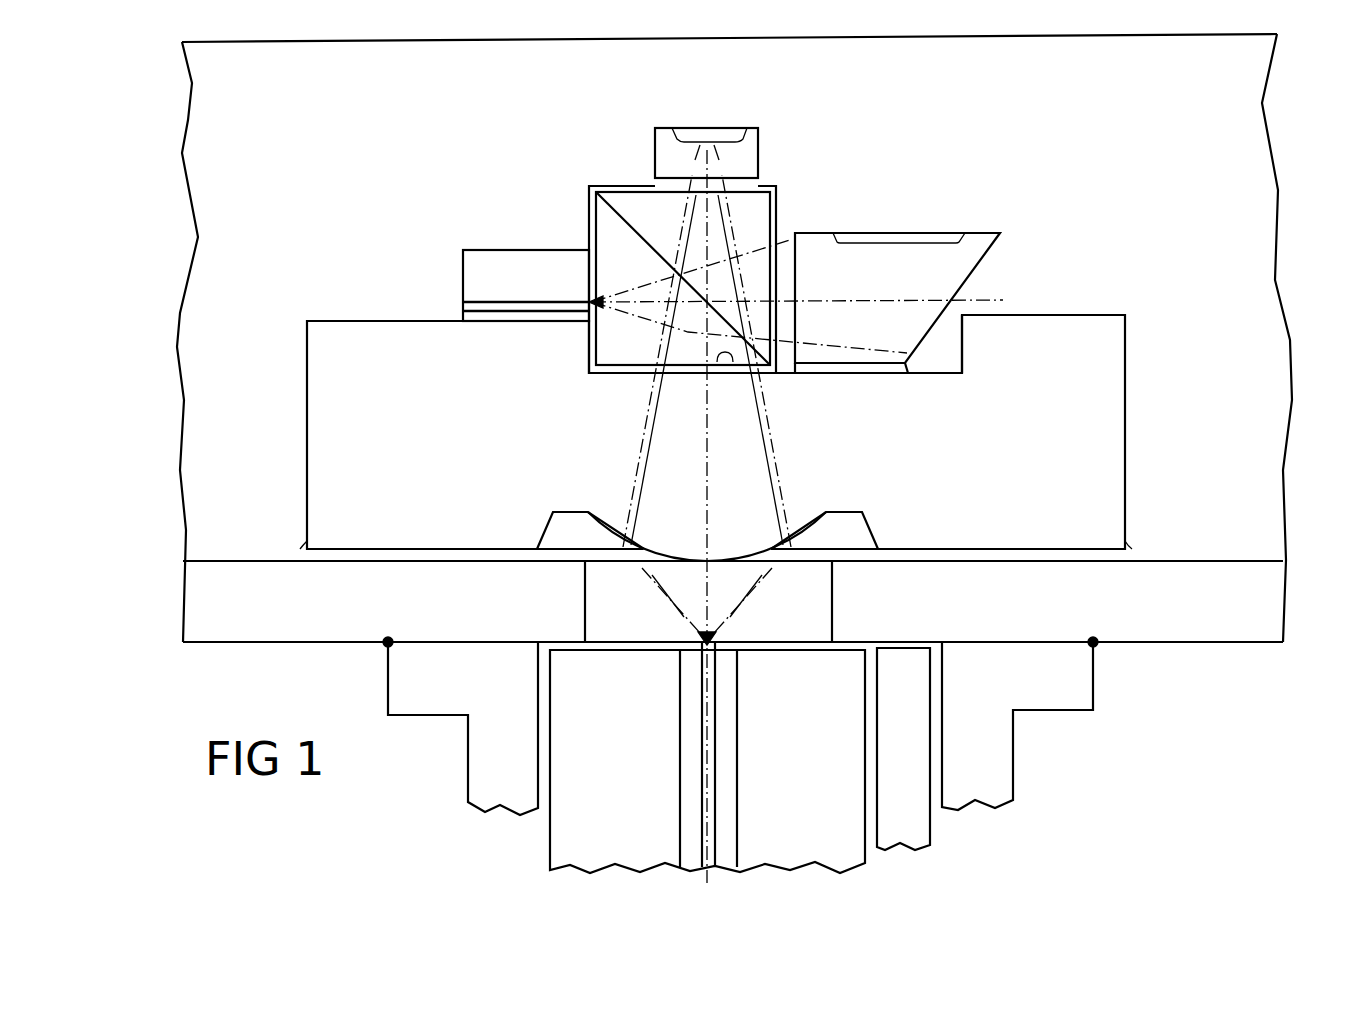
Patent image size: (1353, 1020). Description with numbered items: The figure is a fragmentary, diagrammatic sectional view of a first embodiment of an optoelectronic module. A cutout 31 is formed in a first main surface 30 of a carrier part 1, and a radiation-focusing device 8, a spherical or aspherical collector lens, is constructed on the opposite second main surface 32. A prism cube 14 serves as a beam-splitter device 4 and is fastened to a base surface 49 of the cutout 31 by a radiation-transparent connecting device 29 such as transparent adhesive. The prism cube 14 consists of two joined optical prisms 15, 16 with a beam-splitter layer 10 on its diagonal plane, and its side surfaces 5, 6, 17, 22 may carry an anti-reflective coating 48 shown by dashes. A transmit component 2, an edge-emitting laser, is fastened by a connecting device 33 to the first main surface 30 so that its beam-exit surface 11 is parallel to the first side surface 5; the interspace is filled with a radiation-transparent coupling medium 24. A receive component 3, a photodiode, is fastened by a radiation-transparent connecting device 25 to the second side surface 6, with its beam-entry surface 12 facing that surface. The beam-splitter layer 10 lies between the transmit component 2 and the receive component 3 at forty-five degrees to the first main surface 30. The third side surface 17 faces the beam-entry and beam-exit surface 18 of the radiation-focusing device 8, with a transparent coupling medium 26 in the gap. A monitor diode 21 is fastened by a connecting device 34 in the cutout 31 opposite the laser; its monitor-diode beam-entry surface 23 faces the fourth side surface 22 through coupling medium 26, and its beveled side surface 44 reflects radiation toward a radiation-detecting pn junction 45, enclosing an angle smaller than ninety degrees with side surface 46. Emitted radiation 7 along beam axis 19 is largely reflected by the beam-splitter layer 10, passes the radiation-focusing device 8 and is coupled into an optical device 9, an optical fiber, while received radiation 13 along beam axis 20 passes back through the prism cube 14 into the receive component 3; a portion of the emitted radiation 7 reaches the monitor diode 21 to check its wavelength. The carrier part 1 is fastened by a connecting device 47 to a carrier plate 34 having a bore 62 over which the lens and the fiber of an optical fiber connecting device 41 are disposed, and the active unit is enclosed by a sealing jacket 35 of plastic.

The carrier part 1 is at (1103, 437).
The transmit component 2 is at (478, 250).
The receive component 3 is at (750, 128).
The beam-splitter device 4 is at (612, 165).
The first side surface 5 is at (590, 207).
The second side surface 6 is at (636, 192).
The emitted radiation 7 is at (643, 326).
The radiation-focusing device 8 is at (653, 568).
The optical device 9 is at (738, 715).
The beam-splitter layer 10 is at (660, 243).
The beam-exit surface 11 is at (584, 294).
The beam-entry surface 12 is at (747, 178).
The received radiation 13 is at (790, 490).
The prism cube 14 is at (680, 211).
The optical prism 15 is at (776, 186).
The optical prism 16 is at (590, 186).
The third side surface 17 is at (724, 362).
The beam-entry and beam-exit surface 18 is at (700, 375).
The beam axis 19 is at (1002, 298).
The beam axis 20 is at (713, 772).
The monitor diode 21 is at (982, 237).
The fourth side surface 22 is at (780, 215).
The monitor-diode beam-entry surface 23 is at (797, 266).
The radiation-transparent coupling medium 24 is at (590, 232).
The radiation-transparent connecting device 25 is at (668, 180).
The transparent coupling medium 26 is at (790, 378).
The radiation-transparent connecting device 29 is at (589, 372).
The first main surface 30 is at (342, 321).
The cutout 31 is at (950, 352).
The second main surface 32 is at (1083, 545).
The connecting device 33 is at (460, 316).
The carrier plate 34 is at (1222, 614).
The sealing jacket 35 is at (1225, 152).
The optical fiber connecting device 41 is at (1045, 755).
The side surface 44 is at (1000, 246).
The pn junction 45 is at (900, 232).
The side surface 46 is at (958, 232).
The connecting device 47 is at (307, 549).
The anti-reflective coating 48 is at (628, 375).
The base surface 49 is at (958, 375).
The bore 62 is at (811, 628).